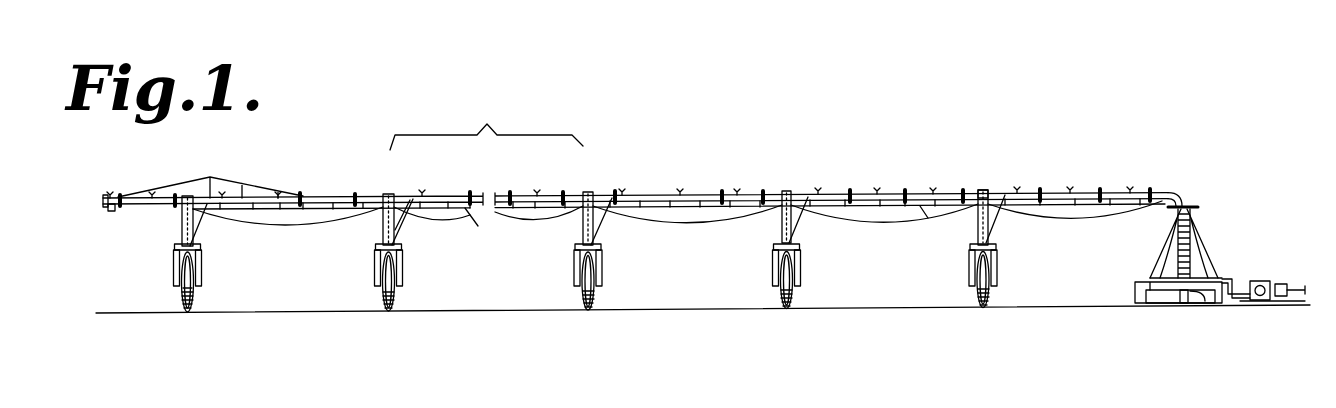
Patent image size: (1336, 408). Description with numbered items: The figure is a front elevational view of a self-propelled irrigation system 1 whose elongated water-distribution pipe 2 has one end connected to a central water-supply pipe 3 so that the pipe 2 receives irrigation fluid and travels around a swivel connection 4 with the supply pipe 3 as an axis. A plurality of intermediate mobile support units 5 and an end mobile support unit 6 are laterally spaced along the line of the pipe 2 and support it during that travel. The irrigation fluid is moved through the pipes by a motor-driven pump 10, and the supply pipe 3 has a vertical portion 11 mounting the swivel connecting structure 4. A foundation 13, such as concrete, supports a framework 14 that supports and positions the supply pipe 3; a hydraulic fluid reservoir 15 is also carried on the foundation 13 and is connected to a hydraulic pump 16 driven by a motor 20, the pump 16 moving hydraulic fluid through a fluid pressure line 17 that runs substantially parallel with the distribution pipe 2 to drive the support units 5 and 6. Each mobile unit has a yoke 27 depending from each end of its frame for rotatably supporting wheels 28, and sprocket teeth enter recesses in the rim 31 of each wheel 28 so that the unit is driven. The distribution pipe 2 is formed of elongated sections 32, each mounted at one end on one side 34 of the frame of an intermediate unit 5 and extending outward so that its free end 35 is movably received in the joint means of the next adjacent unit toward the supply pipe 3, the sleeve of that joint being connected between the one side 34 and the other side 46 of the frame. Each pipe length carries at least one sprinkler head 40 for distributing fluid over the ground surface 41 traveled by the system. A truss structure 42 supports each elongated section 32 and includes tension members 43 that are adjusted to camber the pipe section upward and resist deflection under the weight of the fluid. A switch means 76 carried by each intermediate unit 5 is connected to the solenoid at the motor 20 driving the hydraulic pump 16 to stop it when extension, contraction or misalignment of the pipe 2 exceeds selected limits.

The self-propelled irrigation system 1 is at (103, 197).
The water-distribution pipe 2 is at (471, 195).
The central water-supply pipe 3 is at (1190, 193).
The swivel connection 4 is at (1188, 208).
The intermediate mobile support unit 5 is at (376, 246).
The end mobile support unit 6 is at (196, 248).
The motor-driven pump 10 is at (1289, 285).
The vertical portion 11 is at (1168, 240).
The foundation 13 is at (1136, 284).
The framework 14 is at (1204, 243).
The hydraulic fluid reservoir 15 is at (1158, 301).
The hydraulic pump 16 is at (1204, 298).
The fluid pressure line 17 is at (476, 224).
The motor 20 is at (1183, 306).
The yoke 27 is at (202, 275).
The wheel 28 is at (380, 300).
The rim 31 is at (184, 290).
The elongated section 32 is at (735, 195).
The one side 34 is at (405, 222).
The free end 35 is at (375, 195).
The sprinkler head 40 is at (332, 195).
The ground surface 41 is at (471, 309).
The truss structure 42 is at (684, 224).
The tension member 43 is at (293, 226).
The other side 46 is at (980, 190).
The switch means 76 is at (581, 233).